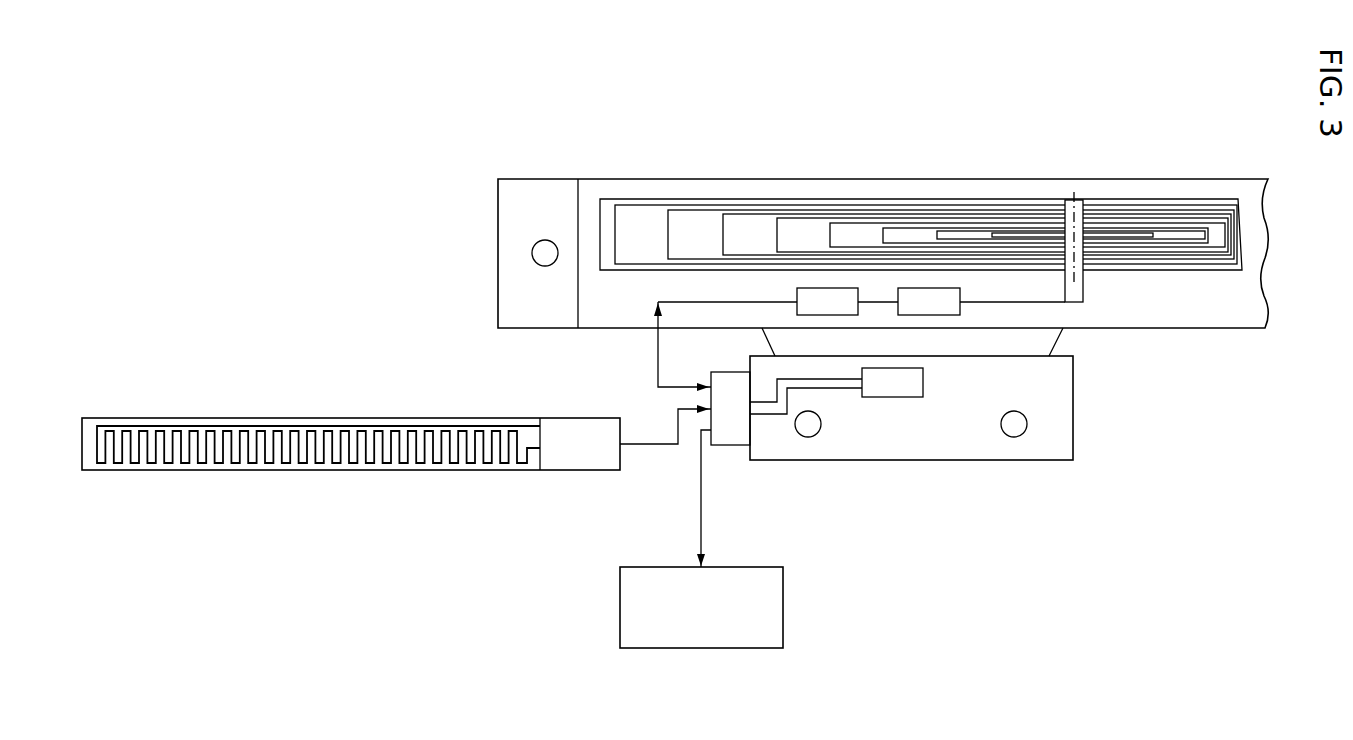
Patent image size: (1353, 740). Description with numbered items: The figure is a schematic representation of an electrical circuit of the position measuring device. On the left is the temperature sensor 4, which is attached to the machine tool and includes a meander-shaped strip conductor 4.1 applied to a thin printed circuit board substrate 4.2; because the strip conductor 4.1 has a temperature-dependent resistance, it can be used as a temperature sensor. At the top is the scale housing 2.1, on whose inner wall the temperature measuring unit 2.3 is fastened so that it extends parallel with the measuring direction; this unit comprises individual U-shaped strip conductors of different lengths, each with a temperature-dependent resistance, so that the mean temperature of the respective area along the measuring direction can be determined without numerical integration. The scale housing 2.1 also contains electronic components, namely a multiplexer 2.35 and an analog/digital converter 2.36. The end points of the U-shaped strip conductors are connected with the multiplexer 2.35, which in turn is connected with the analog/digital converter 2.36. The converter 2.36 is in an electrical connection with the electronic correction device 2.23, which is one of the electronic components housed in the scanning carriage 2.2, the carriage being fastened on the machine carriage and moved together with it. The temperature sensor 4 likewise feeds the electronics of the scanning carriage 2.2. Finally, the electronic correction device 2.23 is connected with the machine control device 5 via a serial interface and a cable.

The scale housing 2.1 is at (537, 205).
The temperature measuring unit 2.3 is at (690, 225).
The analog/digital converter 2.36 is at (827, 300).
The multiplexer 2.35 is at (929, 300).
The scanning carriage 2.2 is at (928, 421).
The electronic correction device 2.23 is at (836, 390).
The temperature sensor 4 is at (351, 451).
The meander-shaped strip conductor 4.1 is at (230, 433).
The printed circuit board substrate 4.2 is at (88, 416).
The machine control device 5 is at (701, 607).